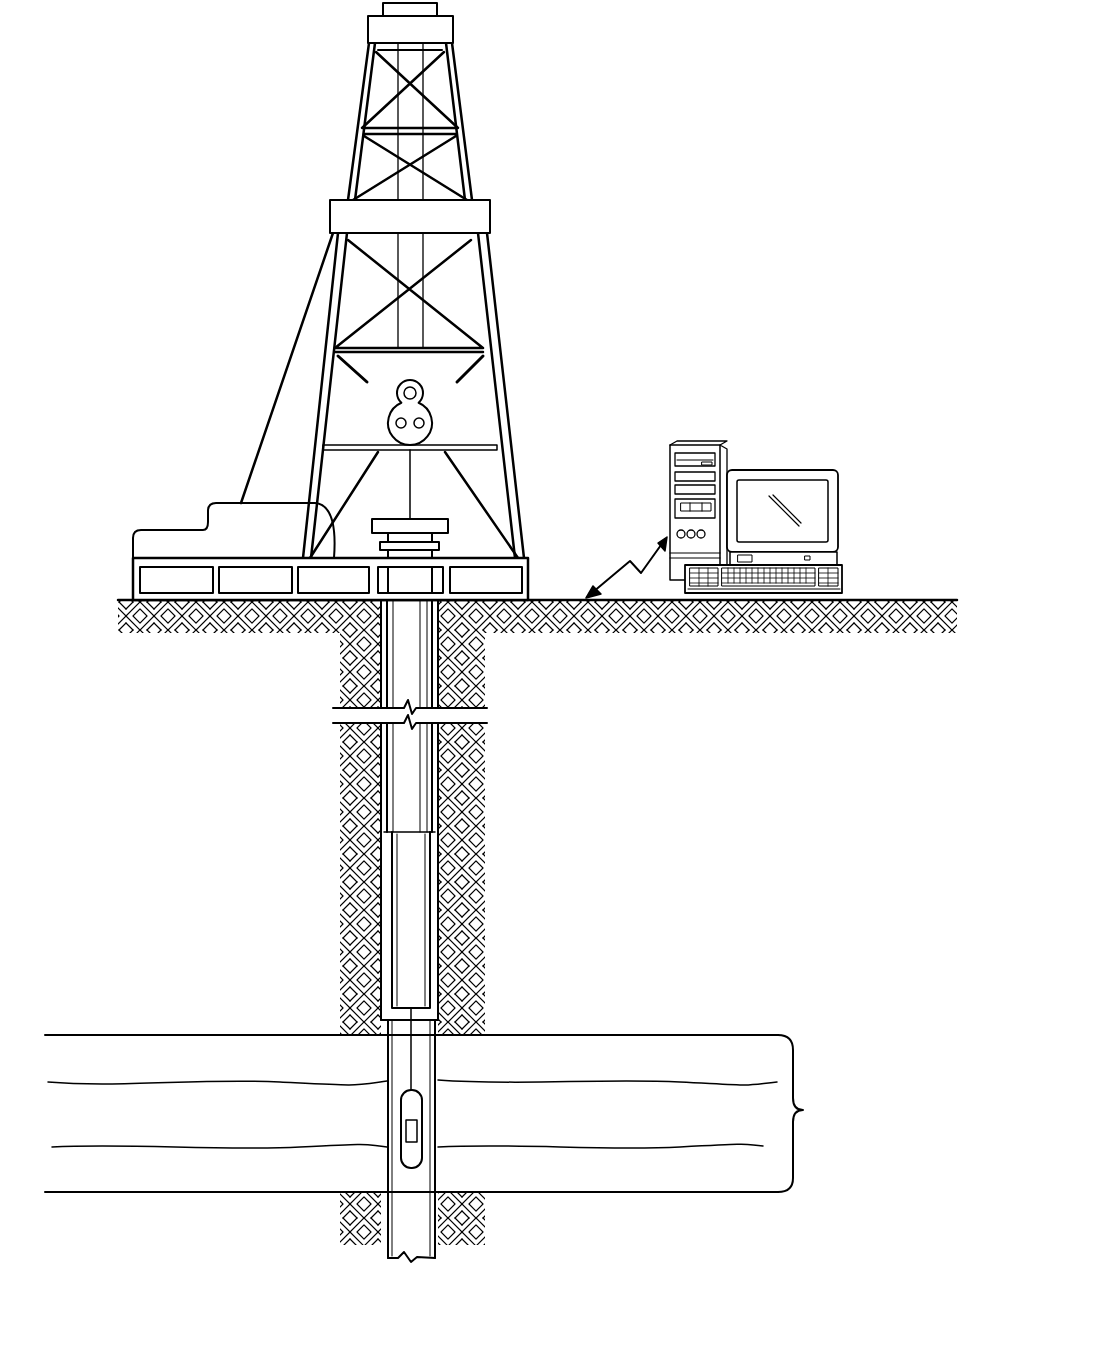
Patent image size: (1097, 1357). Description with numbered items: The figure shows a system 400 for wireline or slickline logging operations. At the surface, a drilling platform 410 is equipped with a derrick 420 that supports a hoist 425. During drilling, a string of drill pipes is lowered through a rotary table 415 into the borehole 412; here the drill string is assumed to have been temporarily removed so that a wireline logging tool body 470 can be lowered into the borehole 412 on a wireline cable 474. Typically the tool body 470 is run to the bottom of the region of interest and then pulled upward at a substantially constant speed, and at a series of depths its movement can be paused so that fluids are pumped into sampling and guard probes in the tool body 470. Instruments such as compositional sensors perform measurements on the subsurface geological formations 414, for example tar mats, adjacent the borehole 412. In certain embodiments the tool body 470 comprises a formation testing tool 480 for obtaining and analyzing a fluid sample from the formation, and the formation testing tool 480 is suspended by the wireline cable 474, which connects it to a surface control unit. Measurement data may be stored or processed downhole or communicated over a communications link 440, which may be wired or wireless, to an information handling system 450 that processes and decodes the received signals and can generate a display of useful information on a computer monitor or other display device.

The system 400 is at (773, 221).
The drilling platform 410 is at (538, 562).
The borehole 412 is at (385, 1052).
The subsurface geological formations 414 is at (803, 1110).
The rotary table 415 is at (438, 518).
The derrick 420 is at (517, 507).
The hoist 425 is at (427, 392).
The communications link 440 is at (640, 557).
The information handling system 450 is at (727, 455).
The wireline logging tool body 470 is at (414, 1093).
The wireline cable 474 is at (412, 1070).
The formation testing tool 480 is at (418, 1128).